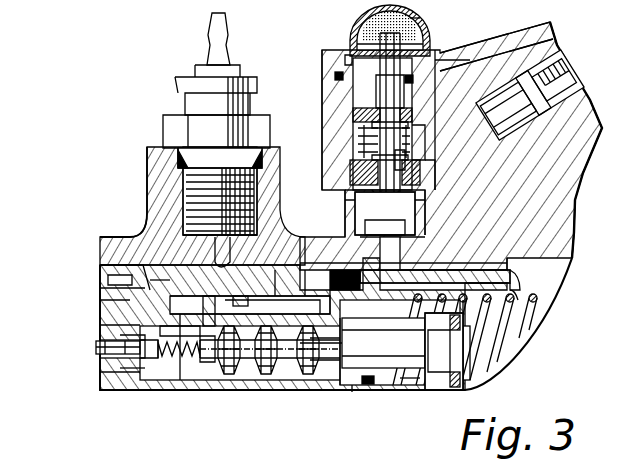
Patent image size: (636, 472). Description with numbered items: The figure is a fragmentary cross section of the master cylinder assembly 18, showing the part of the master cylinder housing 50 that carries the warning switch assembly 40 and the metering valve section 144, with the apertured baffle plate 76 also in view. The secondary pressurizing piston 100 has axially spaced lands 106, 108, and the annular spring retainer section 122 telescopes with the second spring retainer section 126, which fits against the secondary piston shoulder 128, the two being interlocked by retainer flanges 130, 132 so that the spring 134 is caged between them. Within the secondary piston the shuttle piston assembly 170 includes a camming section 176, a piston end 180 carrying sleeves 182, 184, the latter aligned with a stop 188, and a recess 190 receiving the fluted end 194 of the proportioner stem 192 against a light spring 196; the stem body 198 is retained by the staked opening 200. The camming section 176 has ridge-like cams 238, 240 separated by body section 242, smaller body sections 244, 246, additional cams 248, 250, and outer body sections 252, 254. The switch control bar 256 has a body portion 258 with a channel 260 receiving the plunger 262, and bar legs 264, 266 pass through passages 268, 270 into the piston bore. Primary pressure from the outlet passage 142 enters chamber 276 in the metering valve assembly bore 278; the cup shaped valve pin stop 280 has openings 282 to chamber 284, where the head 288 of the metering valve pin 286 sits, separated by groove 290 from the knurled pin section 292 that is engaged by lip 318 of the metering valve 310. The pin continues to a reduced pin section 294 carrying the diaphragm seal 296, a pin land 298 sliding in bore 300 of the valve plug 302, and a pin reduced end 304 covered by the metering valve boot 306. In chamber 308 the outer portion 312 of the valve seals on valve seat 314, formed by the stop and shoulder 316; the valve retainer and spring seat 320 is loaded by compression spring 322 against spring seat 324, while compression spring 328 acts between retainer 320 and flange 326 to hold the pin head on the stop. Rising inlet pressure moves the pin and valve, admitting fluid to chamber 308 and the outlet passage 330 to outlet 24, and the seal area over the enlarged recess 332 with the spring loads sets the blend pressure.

The master cylinder assembly 18 is at (600, 163).
The master cylinder assembly outlet 24 is at (550, 85).
The warning switch assembly 40 is at (150, 130).
The master cylinder housing 50 is at (587, 198).
The apertured baffle plate 76 is at (93, 274).
The secondary pressurizing piston 100 is at (100, 399).
The land 106 is at (345, 277).
The land 108 is at (160, 252).
The annular spring retainer section 122 is at (575, 250).
The second spring retainer section 126 is at (485, 270).
The secondary piston shoulder 128 is at (385, 362).
The retainer flange 130 is at (505, 258).
The retainer flange 132 is at (525, 292).
The spring 134 is at (500, 342).
The outlet passage 142 is at (380, 250).
The metering valve section 144 is at (511, 44).
The shuttle piston assembly 170 is at (112, 375).
The camming section 176 is at (240, 380).
The piston end 180 is at (372, 382).
The sleeve 182 is at (360, 392).
The sleeve 184 is at (408, 380).
The stop 188 is at (478, 366).
The recess 190 is at (163, 368).
The proportioner stem 192 is at (96, 346).
The fluted end 194 is at (125, 340).
The light spring 196 is at (130, 372).
The stem body 198 is at (120, 360).
The staked recess opening 200 is at (120, 332).
The annular ridge-like cam 238 is at (263, 372).
The annular ridge-like cam 240 is at (290, 365).
The body section 242 is at (300, 372).
The body section 244 is at (218, 365).
The body section 246 is at (325, 292).
The ridge-like cam 248 is at (192, 380).
The ridge-like cam 250 is at (332, 380).
The body section 252 is at (160, 285).
The body section 254 is at (350, 372).
The switch control bar 256 is at (222, 213).
The body portion 258 is at (250, 244).
The channel 260 is at (345, 225).
The plunger 262 is at (186, 226).
The bar leg 264 is at (210, 290).
The bar leg 266 is at (280, 280).
The passage 268 is at (235, 306).
The passage 270 is at (310, 290).
The chamber 276 is at (400, 262).
The metering valve assembly bore 278 is at (503, 53).
The valve pin stop 280 is at (372, 200).
The openings 282 is at (400, 240).
The chamber 284 is at (415, 225).
The metering valve pin 286 is at (368, 228).
The head 288 is at (430, 210).
The groove 290 is at (405, 185).
The knurled pin section 292 is at (430, 168).
The reduced pin section 294 is at (440, 60).
The diaphragm seal 296 is at (355, 90).
The pin land 298 is at (345, 60).
The bore 300 is at (352, 62).
The valve plug 302 is at (352, 30).
The pin reduced end 304 is at (390, 30).
The metering valve boot 306 is at (420, 18).
The chamber 308 is at (372, 145).
The metering valve 310 is at (405, 158).
The outer portion 312 is at (440, 190).
The valve seat 314 is at (345, 208).
The shoulder 316 is at (352, 190).
The annular section or lip 318 is at (400, 203).
The valve retainer and spring seat 320 is at (352, 165).
The compression spring 322 is at (420, 135).
The spring seat 324 is at (340, 78).
The flange 326 is at (365, 130).
The compression spring 328 is at (358, 108).
The outlet passage 330 is at (415, 100).
The enlarged recess 332 is at (412, 82).